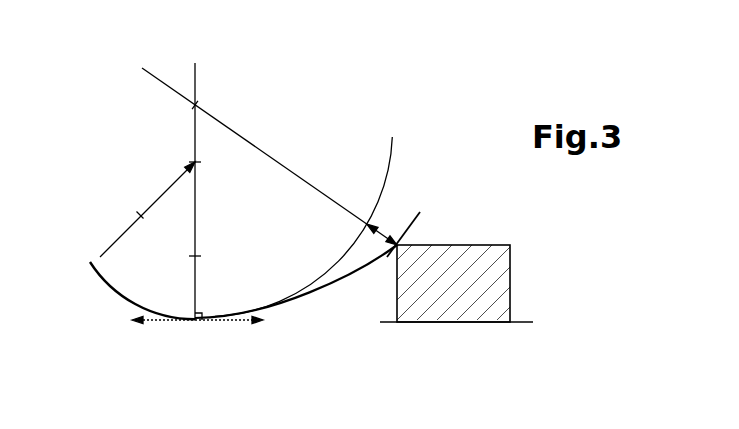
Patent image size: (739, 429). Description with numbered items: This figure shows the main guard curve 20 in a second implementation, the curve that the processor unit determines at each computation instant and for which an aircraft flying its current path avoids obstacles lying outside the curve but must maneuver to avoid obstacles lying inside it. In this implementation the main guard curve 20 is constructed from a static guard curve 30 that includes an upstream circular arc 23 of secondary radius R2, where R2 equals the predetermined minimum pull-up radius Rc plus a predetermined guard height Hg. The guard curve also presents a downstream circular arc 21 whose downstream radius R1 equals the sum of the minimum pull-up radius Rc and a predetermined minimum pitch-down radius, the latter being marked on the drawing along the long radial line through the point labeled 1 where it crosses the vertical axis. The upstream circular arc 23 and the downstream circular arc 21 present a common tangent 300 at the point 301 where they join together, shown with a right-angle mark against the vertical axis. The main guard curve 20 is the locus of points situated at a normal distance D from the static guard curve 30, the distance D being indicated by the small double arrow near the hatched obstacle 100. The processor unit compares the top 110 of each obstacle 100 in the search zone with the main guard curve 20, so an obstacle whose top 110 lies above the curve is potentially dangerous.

The intersection point 1 is at (197, 105).
The predetermined minimum pull-up radius Rc is at (159, 196).
The downstream radius R1 is at (268, 168).
The secondary radius R2 is at (122, 219).
The predetermined guard height Hg is at (100, 255).
The upstream circular arc 23 is at (130, 300).
The main guard curve 20 is at (346, 292).
The downstream circular arc 21 is at (318, 266).
The static guard curve 30 is at (300, 275).
The point 301 is at (197, 312).
The common tangent 300 is at (197, 334).
The normal distance D is at (384, 223).
The top 110 is at (397, 245).
The obstacle 100 is at (503, 281).